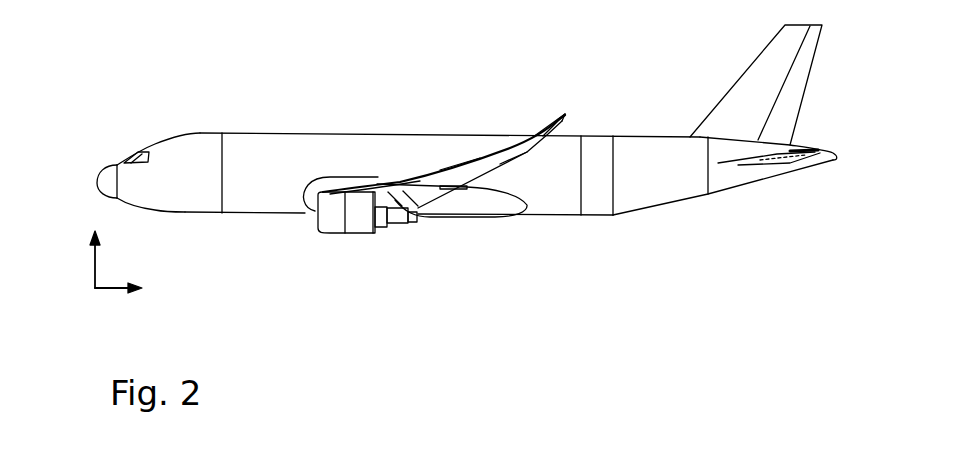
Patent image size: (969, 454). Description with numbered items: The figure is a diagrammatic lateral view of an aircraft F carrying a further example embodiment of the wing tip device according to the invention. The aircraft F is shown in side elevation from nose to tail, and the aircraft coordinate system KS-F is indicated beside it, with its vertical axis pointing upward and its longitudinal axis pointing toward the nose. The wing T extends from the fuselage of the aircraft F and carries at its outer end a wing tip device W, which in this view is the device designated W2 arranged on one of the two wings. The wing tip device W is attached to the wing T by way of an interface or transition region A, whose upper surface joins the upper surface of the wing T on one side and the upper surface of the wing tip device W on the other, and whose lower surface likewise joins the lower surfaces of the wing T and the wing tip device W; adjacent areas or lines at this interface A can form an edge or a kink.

The aircraft F is at (386, 108).
The wing tip device W is at (584, 121).
The wing tip device W2 is at (558, 117).
The wing T is at (472, 173).
The transition region A is at (525, 152).
The aircraft coordinate system KS-F is at (151, 268).